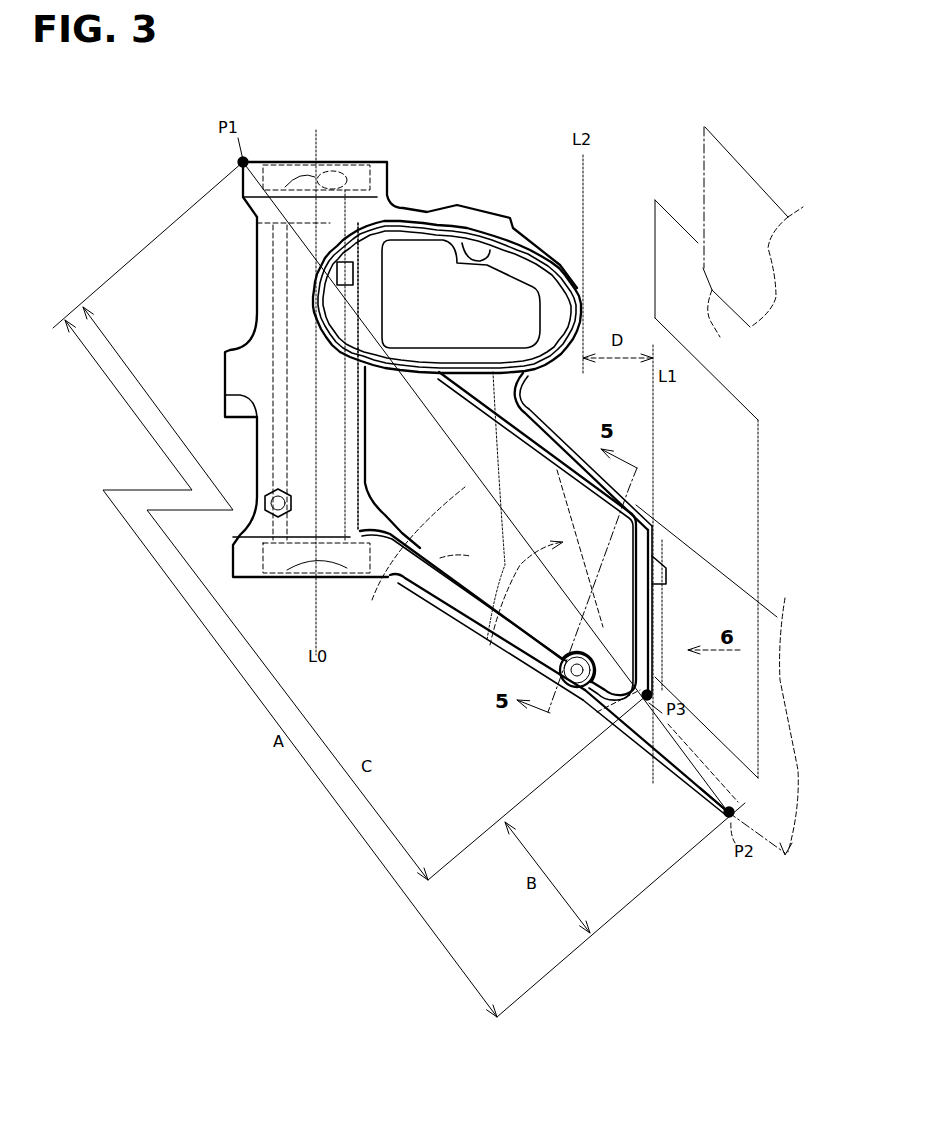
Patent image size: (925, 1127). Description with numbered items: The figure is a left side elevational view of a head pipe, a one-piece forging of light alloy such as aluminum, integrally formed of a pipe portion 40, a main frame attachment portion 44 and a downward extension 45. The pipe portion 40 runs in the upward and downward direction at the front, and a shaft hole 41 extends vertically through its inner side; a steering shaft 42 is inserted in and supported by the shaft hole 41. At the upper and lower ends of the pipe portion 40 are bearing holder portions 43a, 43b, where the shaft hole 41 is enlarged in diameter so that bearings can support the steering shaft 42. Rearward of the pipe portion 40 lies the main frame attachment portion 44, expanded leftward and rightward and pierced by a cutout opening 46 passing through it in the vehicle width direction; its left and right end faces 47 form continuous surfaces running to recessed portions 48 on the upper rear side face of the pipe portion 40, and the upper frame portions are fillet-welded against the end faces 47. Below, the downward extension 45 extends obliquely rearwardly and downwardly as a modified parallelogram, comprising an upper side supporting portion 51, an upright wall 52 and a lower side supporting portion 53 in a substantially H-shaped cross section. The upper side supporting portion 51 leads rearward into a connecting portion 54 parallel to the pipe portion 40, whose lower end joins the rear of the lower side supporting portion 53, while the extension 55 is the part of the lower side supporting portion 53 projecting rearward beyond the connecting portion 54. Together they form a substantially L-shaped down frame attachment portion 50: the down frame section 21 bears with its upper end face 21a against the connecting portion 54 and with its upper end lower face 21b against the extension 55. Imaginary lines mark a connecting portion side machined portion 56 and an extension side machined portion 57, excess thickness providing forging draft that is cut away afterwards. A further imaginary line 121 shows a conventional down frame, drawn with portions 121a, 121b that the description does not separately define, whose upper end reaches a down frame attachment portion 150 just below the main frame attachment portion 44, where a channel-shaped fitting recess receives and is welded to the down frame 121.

The down frame section 21 is at (743, 215).
The upper end face 21a is at (703, 154).
The upper end lower face 21b is at (709, 300).
The pipe portion 40 is at (250, 322).
The shaft hole 41 is at (273, 272).
The steering shaft 42 is at (257, 462).
The bearing holder portion 43a is at (320, 165).
The bearing holder portion 43b is at (243, 573).
The main frame attachment portion 44 is at (540, 240).
The downward extension 45 is at (571, 443).
The cutout opening 46 is at (440, 275).
The left and right end faces 47 is at (540, 297).
The recessed portions 48 is at (349, 262).
The down frame attachment portion 50 is at (676, 781).
The upper side supporting portion 51 is at (637, 478).
The upright wall 52 is at (445, 560).
The lower side supporting portion 53 is at (443, 598).
The connecting portion 54 is at (660, 597).
The extension 55 is at (634, 735).
The connecting portion side machined portion 56 is at (660, 617).
The extension side machined portion 57 is at (697, 798).
The conventional down frame 121 is at (737, 593).
The upper panel portion 121a is at (392, 560).
The lower panel portion 121b is at (607, 712).
The down frame attachment portion 150 is at (490, 645).